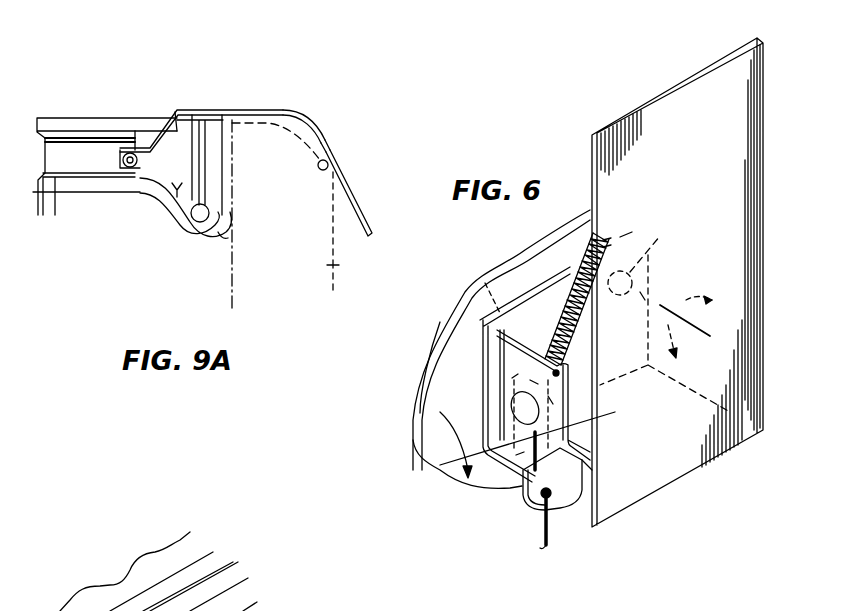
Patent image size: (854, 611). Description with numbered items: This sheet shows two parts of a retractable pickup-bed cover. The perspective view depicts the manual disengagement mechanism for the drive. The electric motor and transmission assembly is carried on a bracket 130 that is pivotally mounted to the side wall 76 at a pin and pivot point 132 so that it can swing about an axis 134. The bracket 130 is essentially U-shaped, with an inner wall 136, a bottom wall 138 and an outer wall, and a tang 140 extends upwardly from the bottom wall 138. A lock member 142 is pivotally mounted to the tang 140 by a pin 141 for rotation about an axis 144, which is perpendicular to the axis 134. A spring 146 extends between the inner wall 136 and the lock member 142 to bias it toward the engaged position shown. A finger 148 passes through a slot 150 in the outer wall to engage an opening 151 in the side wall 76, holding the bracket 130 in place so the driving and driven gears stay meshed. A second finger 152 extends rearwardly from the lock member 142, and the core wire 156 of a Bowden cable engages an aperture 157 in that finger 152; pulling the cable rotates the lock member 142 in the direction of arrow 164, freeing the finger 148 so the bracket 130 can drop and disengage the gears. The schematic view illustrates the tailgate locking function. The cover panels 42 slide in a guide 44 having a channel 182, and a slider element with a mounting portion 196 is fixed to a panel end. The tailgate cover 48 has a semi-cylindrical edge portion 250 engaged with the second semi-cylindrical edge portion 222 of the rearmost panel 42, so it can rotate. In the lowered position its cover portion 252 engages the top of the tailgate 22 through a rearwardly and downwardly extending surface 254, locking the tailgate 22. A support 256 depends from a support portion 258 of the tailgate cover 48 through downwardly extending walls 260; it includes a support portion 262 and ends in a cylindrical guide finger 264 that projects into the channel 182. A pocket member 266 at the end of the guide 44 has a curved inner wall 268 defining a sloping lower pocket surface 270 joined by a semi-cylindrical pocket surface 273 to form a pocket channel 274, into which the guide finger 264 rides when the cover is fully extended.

In FIG. 9A, the tailgate 22 is at (335, 268).
In FIG. 9A, the panel 42 is at (90, 131).
In FIG. 9A, the guide 44 is at (57, 118).
In FIG. 9A, the tailgate cover 48 is at (324, 141).
In FIG. 6, the side wall 76 is at (470, 295).
In FIG. 6, the bracket 130 is at (722, 137).
In FIG. 6, the pin and pivot point 132 is at (662, 246).
In FIG. 6, the axis 134 is at (664, 302).
In FIG. 6, the inner wall 136 is at (757, 302).
In FIG. 6, the bottom wall 138 is at (590, 525).
In FIG. 6, the tang 140 is at (546, 290).
In FIG. 6, the pin 141 is at (594, 418).
In FIG. 6, the lock member 142 is at (505, 385).
In FIG. 6, the axis 144 is at (420, 470).
In FIG. 6, the spring 146 is at (575, 333).
In FIG. 6, the finger 148 is at (482, 343).
In FIG. 6, the slot 150 is at (498, 378).
In FIG. 6, the opening 151 is at (478, 270).
In FIG. 6, the finger 152 is at (563, 520).
In FIG. 6, the core wire 156 is at (540, 545).
In FIG. 6, the aperture 157 is at (538, 505).
In FIG. 6, the arrow 164 is at (440, 412).
In FIG. 9A, the channel 182 is at (82, 195).
In FIG. 9A, the mounting portion 196 is at (65, 195).
In FIG. 9A, the second semi-cylindrical edge portion 222 is at (150, 190).
In FIG. 9A, the semi-cylindrical edge portion 250 is at (122, 160).
In FIG. 9A, the cover portion 252 is at (358, 205).
In FIG. 9A, the rearwardly and downwardly extending surface 254 is at (329, 166).
In FIG. 9A, the support 256 is at (202, 112).
In FIG. 9A, the support portion 258 is at (288, 110).
In FIG. 9A, the downwardly extending walls 260 is at (177, 112).
In FIG. 9A, the support portion 262 is at (205, 160).
In FIG. 9A, the cylindrical guide finger 264 is at (209, 213).
In FIG. 9A, the pocket member 266 is at (197, 238).
In FIG. 9A, the curved inner wall 268 is at (168, 228).
In FIG. 9A, the lower pocket surface 270 is at (158, 221).
In FIG. 9A, the semi-cylindrical pocket surface 273 is at (224, 238).
In FIG. 9A, the pocket channel 274 is at (170, 223).